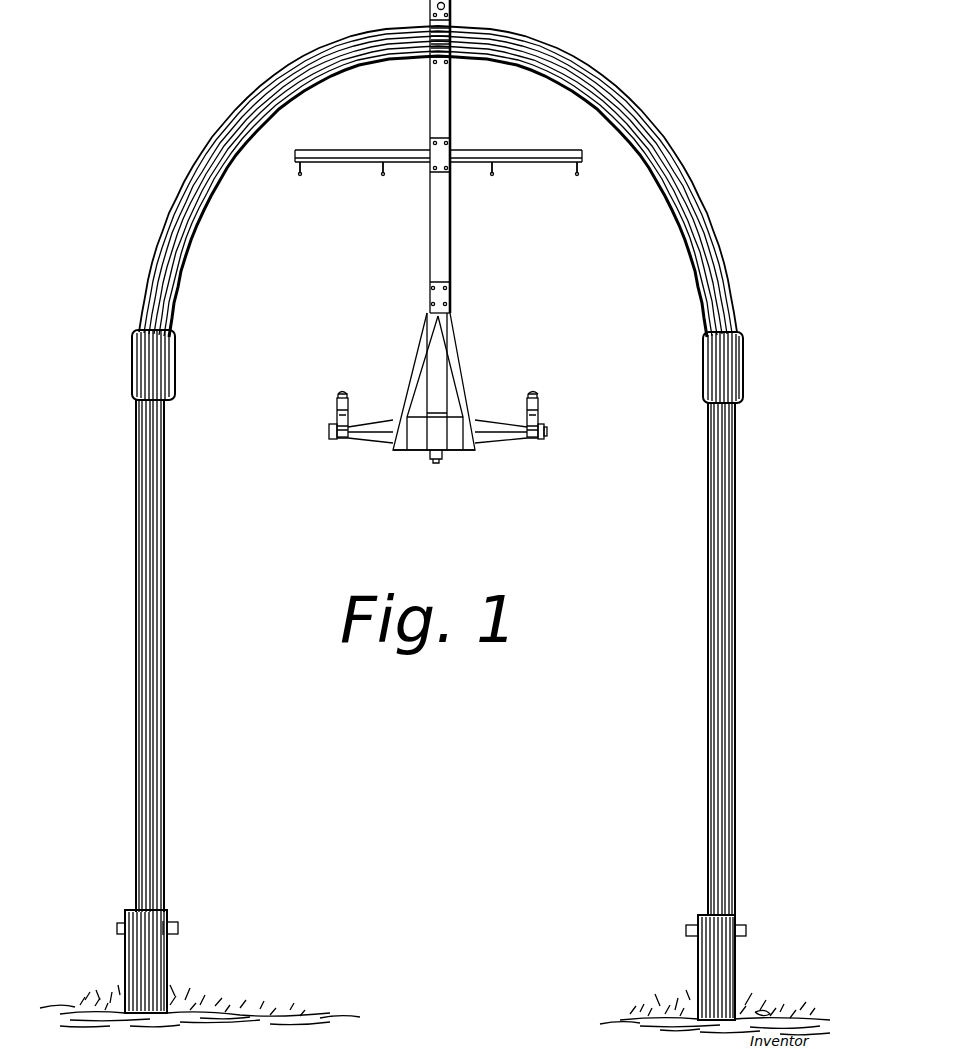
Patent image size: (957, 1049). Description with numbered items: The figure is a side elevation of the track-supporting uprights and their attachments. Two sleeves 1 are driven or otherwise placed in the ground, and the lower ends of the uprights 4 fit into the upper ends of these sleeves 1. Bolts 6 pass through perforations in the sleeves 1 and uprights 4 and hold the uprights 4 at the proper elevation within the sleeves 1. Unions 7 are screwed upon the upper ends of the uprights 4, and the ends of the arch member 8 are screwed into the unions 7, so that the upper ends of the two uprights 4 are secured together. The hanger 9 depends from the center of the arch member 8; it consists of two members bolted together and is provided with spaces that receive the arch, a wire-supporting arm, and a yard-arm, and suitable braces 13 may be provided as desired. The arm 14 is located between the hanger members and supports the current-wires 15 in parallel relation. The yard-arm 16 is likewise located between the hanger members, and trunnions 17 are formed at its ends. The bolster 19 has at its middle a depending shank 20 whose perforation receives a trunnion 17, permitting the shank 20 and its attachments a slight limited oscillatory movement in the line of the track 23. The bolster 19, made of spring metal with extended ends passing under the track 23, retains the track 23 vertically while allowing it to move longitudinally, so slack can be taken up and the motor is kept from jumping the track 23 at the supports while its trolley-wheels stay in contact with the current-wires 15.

The sleeve 1 is at (125, 962).
The upright 4 is at (165, 634).
The bolt 6 is at (178, 924).
The union 7 is at (178, 362).
The arch member 8 is at (204, 184).
The hanger 9 is at (437, 207).
The brace 13 is at (448, 332).
The arm 14 is at (535, 163).
The current-wire 15 is at (491, 176).
The yard-arm 16 is at (494, 457).
The trunnion 17 is at (545, 436).
The bolster 19 is at (539, 405).
The shank 20 is at (540, 418).
The track 23 is at (340, 395).